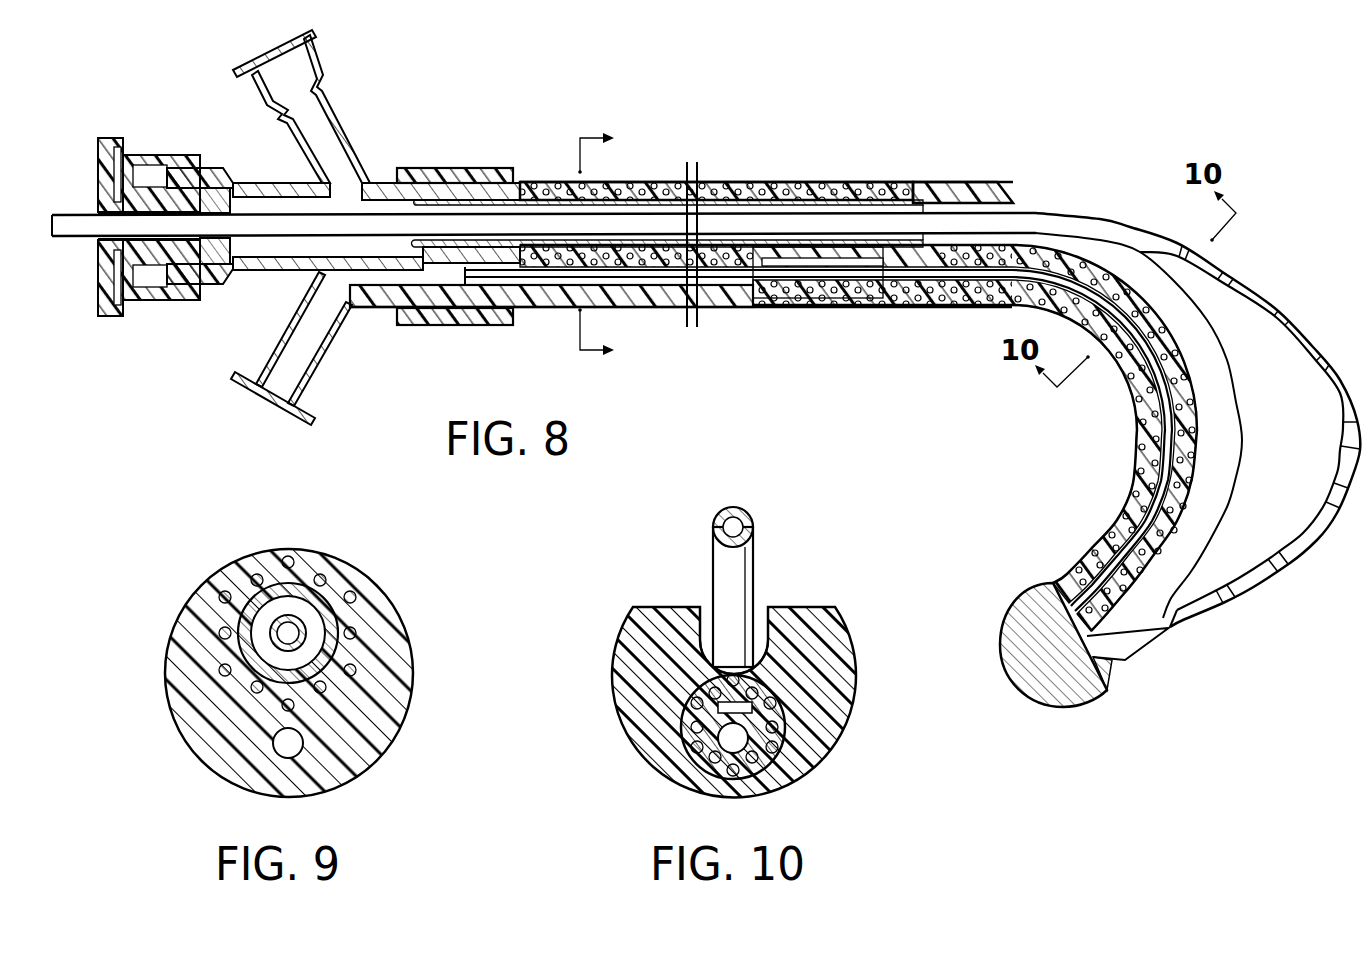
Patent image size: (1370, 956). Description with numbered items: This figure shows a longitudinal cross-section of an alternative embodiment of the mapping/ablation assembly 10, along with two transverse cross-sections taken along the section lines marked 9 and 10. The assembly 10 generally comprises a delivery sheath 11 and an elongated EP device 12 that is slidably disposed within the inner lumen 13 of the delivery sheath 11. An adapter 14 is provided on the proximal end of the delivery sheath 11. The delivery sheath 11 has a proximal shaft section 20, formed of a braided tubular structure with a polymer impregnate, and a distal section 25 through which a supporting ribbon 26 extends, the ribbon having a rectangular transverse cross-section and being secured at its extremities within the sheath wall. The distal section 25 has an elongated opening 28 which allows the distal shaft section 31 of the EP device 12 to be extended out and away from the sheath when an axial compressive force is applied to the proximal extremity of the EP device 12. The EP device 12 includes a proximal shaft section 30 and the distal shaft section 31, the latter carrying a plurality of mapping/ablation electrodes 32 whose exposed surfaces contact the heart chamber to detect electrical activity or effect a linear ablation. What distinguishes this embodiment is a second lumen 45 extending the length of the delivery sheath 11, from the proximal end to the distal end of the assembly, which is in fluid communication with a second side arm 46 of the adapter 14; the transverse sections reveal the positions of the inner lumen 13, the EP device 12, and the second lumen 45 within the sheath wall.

In FIG. 8, the section line 9- 9 is at (609, 244).
In FIG. 8, the mapping/ablation assembly 10 is at (1097, 141).
In FIG. 8, the delivery sheath 11 is at (935, 177).
In FIG. 8, the EP device 12 is at (1104, 220).
In FIG. 9, the EP device 12 is at (268, 633).
In FIG. 10, the EP device 12 is at (753, 570).
In FIG. 8, the inner lumen 13 is at (757, 210).
In FIG. 9, the inner lumen 13 is at (318, 623).
In FIG. 8, the adapter 14 is at (270, 270).
In FIG. 8, the proximal shaft section 20 is at (568, 300).
In FIG. 9, the proximal shaft section 20 is at (367, 728).
In FIG. 8, the distal section 25 is at (1137, 433).
In FIG. 10, the distal section 25 is at (835, 663).
In FIG. 8, the supporting ribbon 26 is at (1197, 463).
In FIG. 10, the supporting ribbon 26 is at (753, 713).
In FIG. 8, the elongated opening 28 is at (1213, 400).
In FIG. 10, the elongated opening 28 is at (708, 622).
In FIG. 8, the proximal shaft section 30 is at (490, 222).
In FIG. 8, the distal shaft section 31 is at (1312, 325).
In FIG. 8, the mapping/ablation electrodes 32 is at (1218, 262).
In FIG. 8, the second lumen 45 is at (643, 277).
In FIG. 9, the second lumen 45 is at (293, 742).
In FIG. 10, the second lumen 45 is at (727, 740).
In FIG. 8, the second side arm 46 is at (333, 338).